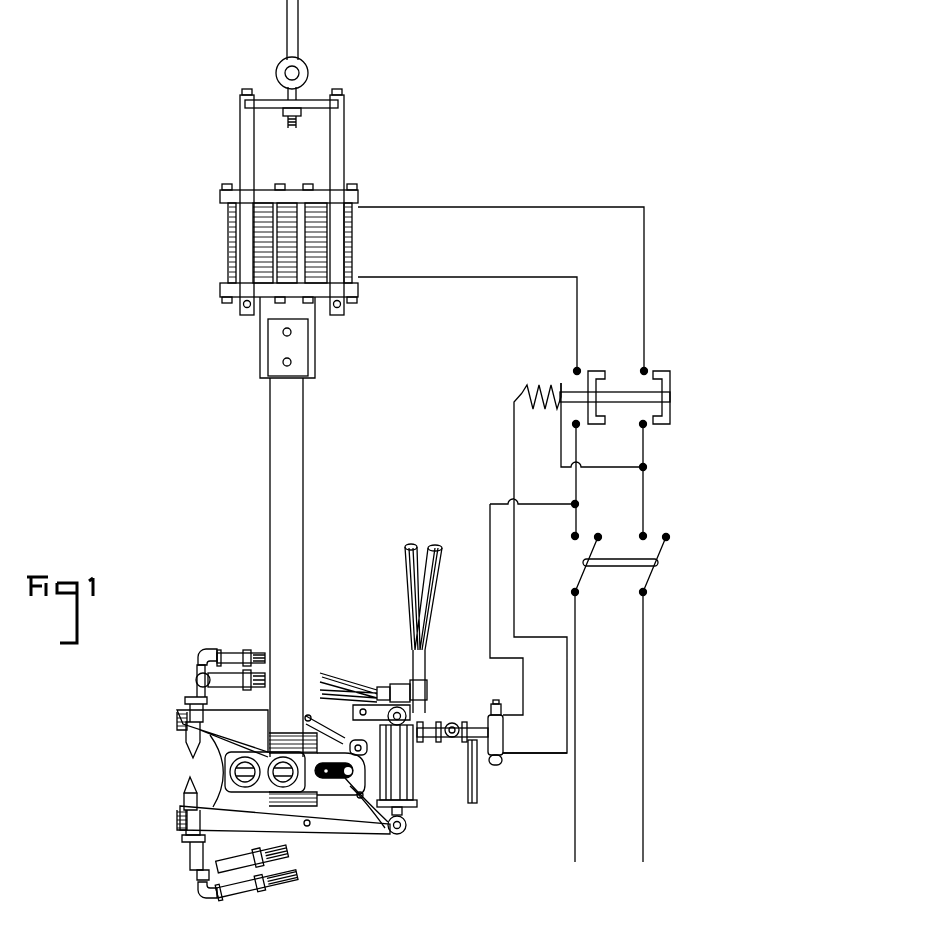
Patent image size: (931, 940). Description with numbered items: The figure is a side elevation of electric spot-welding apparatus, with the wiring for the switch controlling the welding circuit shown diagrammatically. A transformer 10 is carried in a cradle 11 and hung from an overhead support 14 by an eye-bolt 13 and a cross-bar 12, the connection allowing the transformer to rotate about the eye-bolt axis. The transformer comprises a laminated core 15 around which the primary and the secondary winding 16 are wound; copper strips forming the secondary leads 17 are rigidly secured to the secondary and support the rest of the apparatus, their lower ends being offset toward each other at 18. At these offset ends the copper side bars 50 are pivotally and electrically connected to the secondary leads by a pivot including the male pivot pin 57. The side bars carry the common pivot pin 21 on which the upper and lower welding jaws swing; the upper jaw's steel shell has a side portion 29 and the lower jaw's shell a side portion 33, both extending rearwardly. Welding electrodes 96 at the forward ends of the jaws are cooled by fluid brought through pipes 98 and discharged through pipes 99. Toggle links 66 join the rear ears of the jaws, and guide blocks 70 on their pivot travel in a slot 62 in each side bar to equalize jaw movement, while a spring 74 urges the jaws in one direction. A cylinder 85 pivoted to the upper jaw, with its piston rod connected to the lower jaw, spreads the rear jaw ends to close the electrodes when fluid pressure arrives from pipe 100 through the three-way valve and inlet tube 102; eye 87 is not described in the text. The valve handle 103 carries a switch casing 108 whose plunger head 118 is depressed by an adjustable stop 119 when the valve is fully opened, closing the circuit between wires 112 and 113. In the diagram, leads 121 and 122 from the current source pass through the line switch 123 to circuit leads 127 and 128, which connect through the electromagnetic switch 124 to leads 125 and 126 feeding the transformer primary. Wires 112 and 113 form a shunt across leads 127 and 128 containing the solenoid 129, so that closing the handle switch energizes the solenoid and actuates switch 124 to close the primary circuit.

The support 14 is at (294, 45).
The eye-bolt 13 is at (296, 88).
The cross-bar 12 is at (308, 104).
The cradle 11 is at (247, 150).
The transformer 10 is at (318, 198).
The laminated core 15 is at (252, 240).
The secondary winding 16 is at (280, 312).
The secondary leads 17 is at (290, 394).
The lead 126 is at (538, 207).
The lead 125 is at (500, 278).
The solenoid 129 is at (524, 385).
The electromagnetic switch 124 is at (622, 401).
The circuit lead 127 is at (578, 495).
The circuit lead 128 is at (645, 495).
The line switch 123 is at (613, 567).
The circuit wire 112 is at (490, 535).
The cooling pipes 98 is at (237, 655).
The discharge pipes 99 is at (235, 682).
The spring 74 is at (313, 716).
The adjustable stop 119 is at (417, 694).
The inlet tube 102 is at (423, 725).
The plunger head 118 is at (496, 700).
The side portion of protecting shell 29 is at (233, 732).
The offset lower ends of secondary leads 18 is at (182, 733).
The welding electrodes 96 is at (180, 750).
The male pivot pin 21 is at (233, 768).
The switch casing 108 is at (501, 737).
The handle 103 is at (443, 740).
The circuit wire 113 is at (532, 755).
The pipe 100 is at (480, 780).
The side portion of protecting shell 33 is at (270, 810).
The male pivot pin 57 is at (283, 782).
The toggle links 66 is at (352, 780).
The copper side bars 50 is at (312, 775).
The guide blocks 70 is at (328, 774).
The slot 62 is at (346, 772).
The cylinder 85 is at (403, 787).
The pivot eye 87 is at (407, 808).
The lead 121 is at (575, 823).
The lead 122 is at (644, 822).